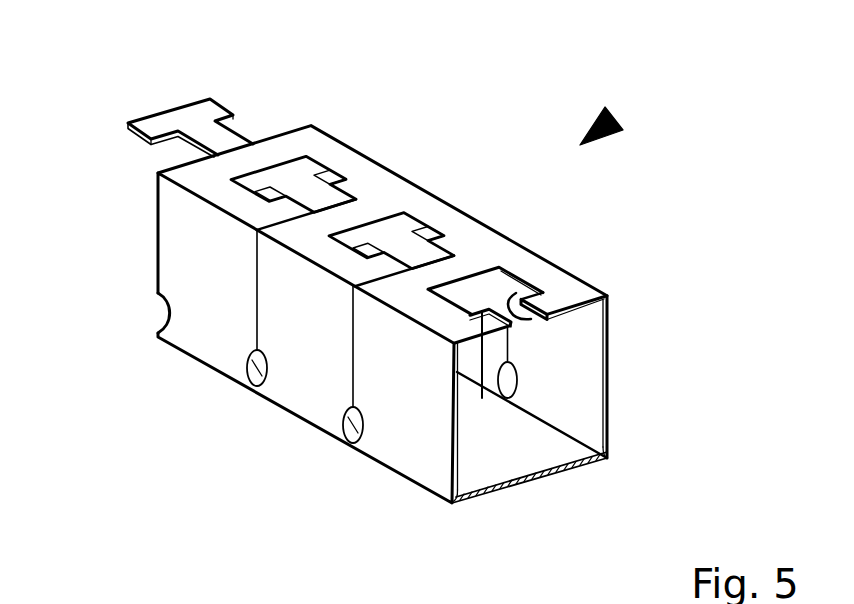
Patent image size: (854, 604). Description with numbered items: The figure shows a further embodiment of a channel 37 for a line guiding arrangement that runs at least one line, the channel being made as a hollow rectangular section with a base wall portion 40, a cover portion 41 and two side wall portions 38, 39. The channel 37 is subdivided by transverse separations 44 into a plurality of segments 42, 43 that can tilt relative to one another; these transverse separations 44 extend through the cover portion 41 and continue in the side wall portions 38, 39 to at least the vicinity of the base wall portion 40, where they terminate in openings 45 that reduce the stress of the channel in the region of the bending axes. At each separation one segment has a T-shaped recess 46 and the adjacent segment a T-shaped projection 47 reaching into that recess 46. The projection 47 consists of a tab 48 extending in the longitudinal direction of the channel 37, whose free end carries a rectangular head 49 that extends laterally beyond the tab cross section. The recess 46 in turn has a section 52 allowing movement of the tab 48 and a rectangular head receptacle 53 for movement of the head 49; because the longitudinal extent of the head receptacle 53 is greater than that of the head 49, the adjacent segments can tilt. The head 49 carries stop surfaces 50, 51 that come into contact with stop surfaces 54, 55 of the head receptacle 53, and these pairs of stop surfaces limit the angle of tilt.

The channel 37 is at (613, 119).
The side wall portion 38 is at (580, 394).
The side wall portion 39 is at (418, 452).
The base wall portion 40 is at (538, 480).
The cover portion 41 is at (510, 270).
The segment 42 is at (224, 296).
The segment 43 is at (321, 350).
The transverse separation 44 is at (255, 317).
The opening 45 is at (260, 367).
The T-shaped recess 46 is at (499, 285).
The T-shaped projection 47 is at (232, 142).
The tab 48 is at (182, 135).
The rectangular head 49 is at (188, 120).
The stop surface 50 is at (170, 148).
The stop surface 51 is at (243, 115).
The section 52 is at (550, 316).
The rectangular head receptacle 53 is at (546, 301).
The stop surface 54 is at (498, 288).
The stop surface 55 is at (531, 319).